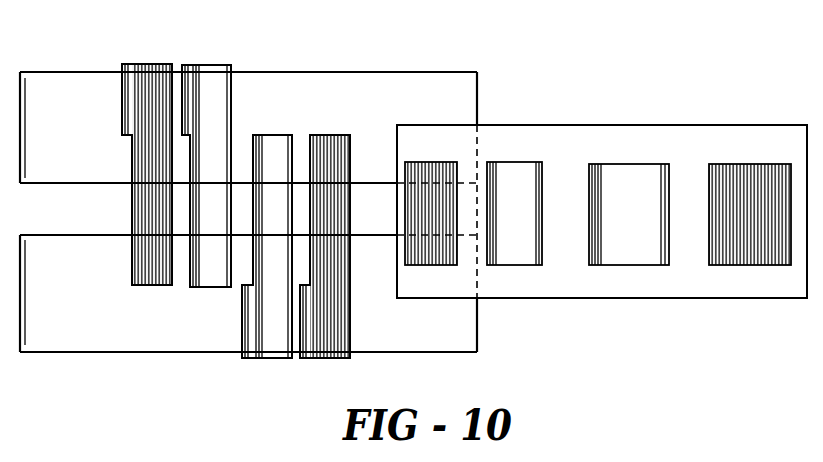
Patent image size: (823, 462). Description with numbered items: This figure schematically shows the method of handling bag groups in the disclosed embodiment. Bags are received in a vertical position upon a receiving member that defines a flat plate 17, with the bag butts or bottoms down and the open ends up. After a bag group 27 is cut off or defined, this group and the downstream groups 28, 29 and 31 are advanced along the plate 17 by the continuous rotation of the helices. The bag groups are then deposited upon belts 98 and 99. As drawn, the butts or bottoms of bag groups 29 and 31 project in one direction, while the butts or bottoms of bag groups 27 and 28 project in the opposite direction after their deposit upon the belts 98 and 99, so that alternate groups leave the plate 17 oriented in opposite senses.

The flat plate 17 is at (600, 130).
The bag group 27 is at (327, 360).
The bag group 28 is at (268, 360).
The bag group 29 is at (214, 65).
The bag group 31 is at (144, 63).
The belt 98 is at (60, 84).
The belt 99 is at (77, 352).